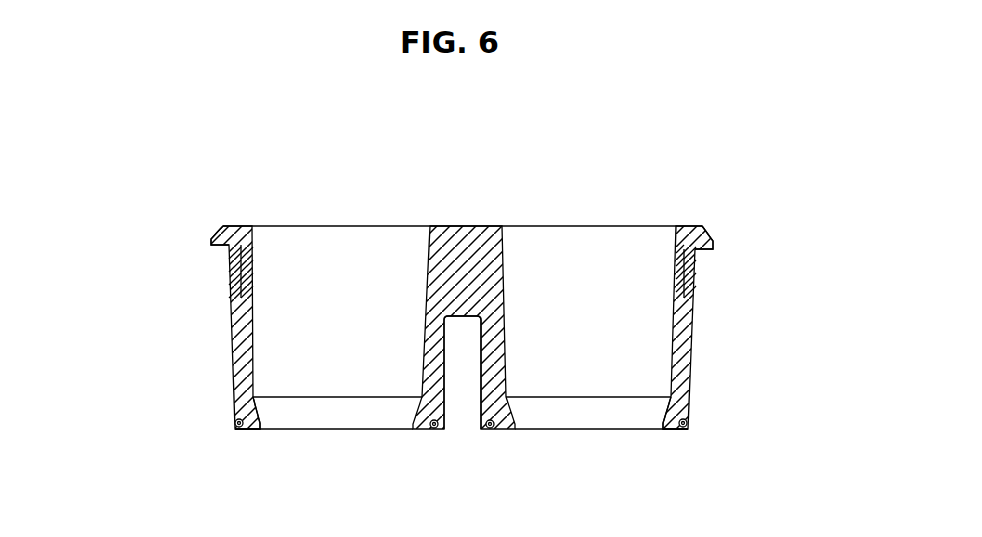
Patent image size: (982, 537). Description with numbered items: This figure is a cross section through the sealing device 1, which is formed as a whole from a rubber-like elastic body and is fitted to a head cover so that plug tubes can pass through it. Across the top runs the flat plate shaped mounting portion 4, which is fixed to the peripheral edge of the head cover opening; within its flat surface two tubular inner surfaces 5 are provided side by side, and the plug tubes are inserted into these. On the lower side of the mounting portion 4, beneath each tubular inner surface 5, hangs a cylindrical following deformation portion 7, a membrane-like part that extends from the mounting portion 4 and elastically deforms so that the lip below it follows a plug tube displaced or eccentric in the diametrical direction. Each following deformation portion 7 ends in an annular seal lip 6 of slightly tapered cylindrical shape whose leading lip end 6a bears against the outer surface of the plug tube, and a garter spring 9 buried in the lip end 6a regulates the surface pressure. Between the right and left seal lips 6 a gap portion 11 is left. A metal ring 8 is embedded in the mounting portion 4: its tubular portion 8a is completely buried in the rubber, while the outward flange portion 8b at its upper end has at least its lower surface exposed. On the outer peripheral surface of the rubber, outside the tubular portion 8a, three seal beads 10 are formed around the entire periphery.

The sealing device 1 is at (203, 208).
The mounting portion 4 is at (466, 243).
The tubular inner surface 5 is at (250, 253).
The seal lip 6 is at (233, 412).
The lip end 6a is at (257, 430).
The following deformation portion 7 is at (232, 367).
The metal ring 8 is at (230, 249).
The tubular portion 8a is at (230, 280).
The flange portion 8b is at (713, 245).
The garter spring 9 is at (237, 432).
The seal bead 10 is at (693, 270).
The gap portion 11 is at (458, 397).